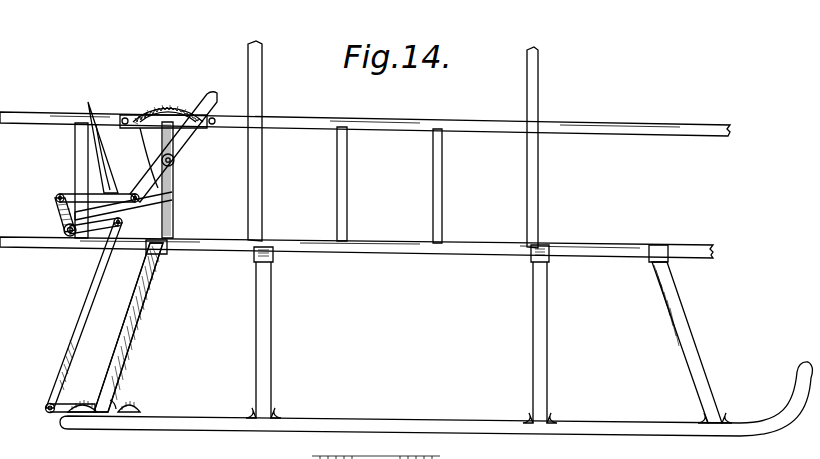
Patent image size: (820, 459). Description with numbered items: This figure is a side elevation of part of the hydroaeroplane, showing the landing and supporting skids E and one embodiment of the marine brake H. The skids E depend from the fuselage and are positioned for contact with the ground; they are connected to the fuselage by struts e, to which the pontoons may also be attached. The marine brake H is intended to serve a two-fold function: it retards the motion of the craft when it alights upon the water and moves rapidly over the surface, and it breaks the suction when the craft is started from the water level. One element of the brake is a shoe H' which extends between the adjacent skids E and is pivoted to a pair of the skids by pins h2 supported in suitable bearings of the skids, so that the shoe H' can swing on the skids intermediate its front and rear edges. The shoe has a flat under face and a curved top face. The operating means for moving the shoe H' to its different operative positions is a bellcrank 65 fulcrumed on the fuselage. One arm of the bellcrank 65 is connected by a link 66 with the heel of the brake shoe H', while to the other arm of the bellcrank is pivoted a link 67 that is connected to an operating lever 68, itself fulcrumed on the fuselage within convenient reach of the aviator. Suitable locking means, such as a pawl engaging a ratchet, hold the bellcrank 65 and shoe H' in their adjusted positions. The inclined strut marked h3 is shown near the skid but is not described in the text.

The bellcrank 65 is at (61, 208).
The link 66 is at (83, 320).
The link 67 is at (108, 192).
The operating lever 68 is at (188, 137).
The pins h2 is at (182, 381).
The inclined strut h3 is at (200, 284).
The marine brake H is at (133, 326).
The brake shoe H' is at (356, 348).
The landing and supporting skids E is at (461, 410).
The struts e is at (693, 356).